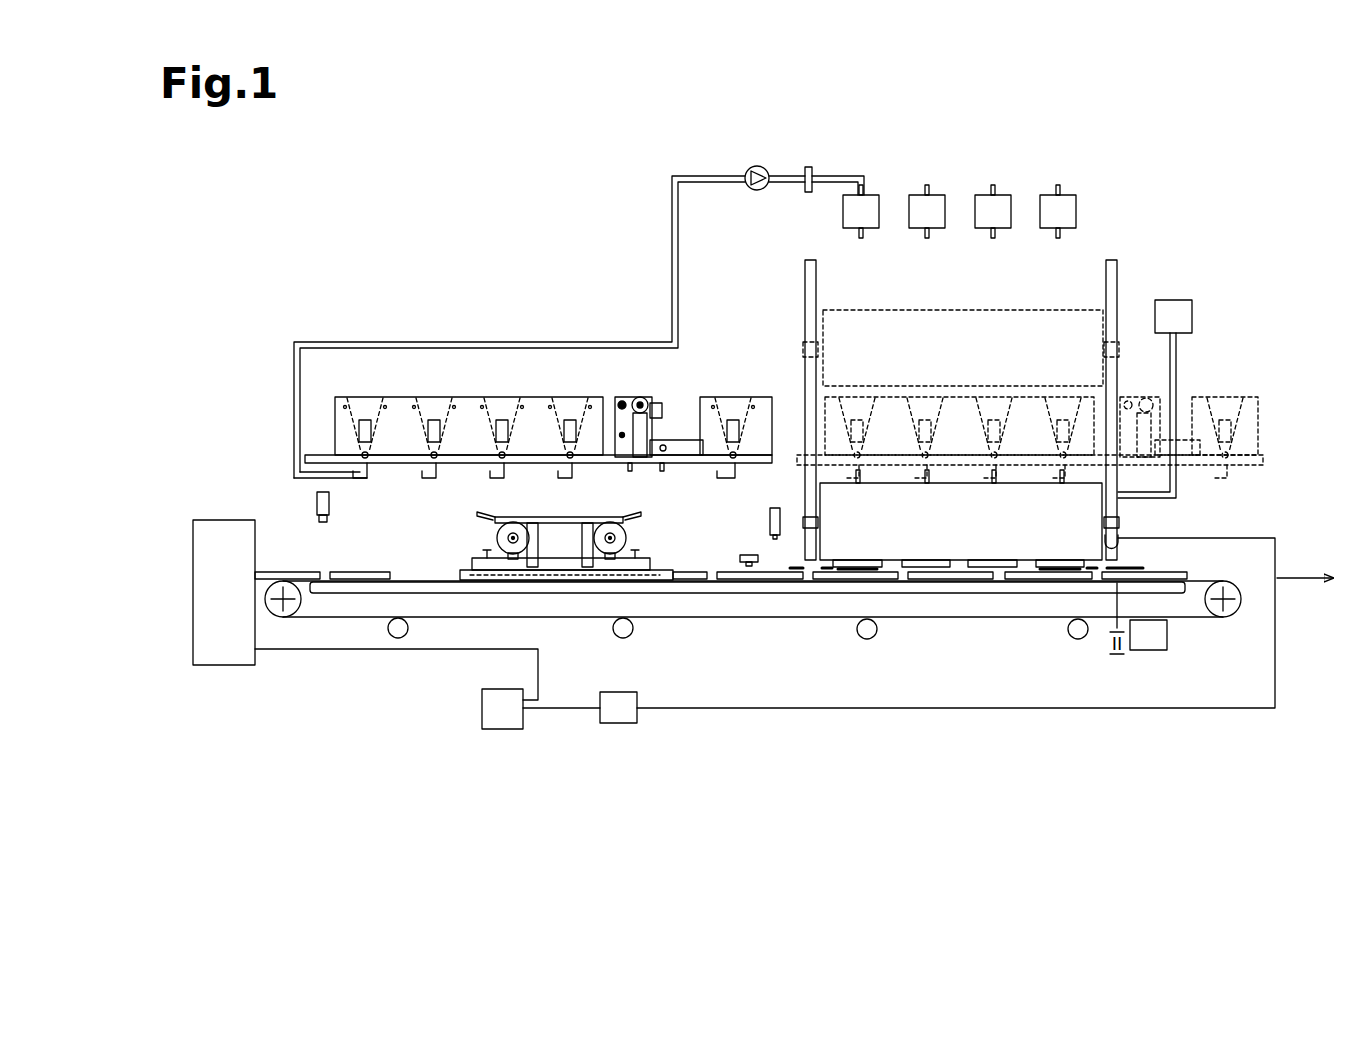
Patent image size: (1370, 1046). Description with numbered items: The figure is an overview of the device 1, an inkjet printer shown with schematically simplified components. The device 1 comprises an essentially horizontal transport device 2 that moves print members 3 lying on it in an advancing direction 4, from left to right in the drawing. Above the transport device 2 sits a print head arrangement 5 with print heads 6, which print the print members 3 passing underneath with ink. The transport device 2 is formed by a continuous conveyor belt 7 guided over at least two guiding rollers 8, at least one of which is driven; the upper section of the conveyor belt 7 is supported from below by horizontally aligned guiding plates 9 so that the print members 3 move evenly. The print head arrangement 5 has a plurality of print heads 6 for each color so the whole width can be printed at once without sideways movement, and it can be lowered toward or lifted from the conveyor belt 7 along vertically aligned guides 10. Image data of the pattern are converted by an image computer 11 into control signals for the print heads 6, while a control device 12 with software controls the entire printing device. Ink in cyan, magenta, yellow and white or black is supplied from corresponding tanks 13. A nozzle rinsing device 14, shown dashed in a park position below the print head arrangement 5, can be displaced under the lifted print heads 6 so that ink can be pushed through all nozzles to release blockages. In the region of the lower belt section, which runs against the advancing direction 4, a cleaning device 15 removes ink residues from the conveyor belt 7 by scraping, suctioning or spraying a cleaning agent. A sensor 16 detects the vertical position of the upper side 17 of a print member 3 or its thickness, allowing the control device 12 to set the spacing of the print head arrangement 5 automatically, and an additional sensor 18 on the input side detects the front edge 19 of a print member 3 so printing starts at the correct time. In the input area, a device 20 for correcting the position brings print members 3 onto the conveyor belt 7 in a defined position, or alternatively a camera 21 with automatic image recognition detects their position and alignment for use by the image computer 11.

The device 1 is at (340, 232).
The transport device 2 is at (333, 628).
The print members 3 is at (378, 568).
The advancing direction 4 is at (1297, 578).
The print head arrangement 5 is at (1070, 503).
The print heads 6 is at (850, 582).
The conveyor belt 7 is at (370, 628).
The guiding rollers 8 is at (270, 630).
The guiding plates 9 is at (430, 600).
The guides 10 is at (798, 278).
The image computer 11 is at (613, 730).
The control device 12 is at (503, 735).
The tanks 13 is at (876, 185).
The nozzle rinsing device 14 is at (435, 385).
The cleaning device 15 is at (1140, 655).
The sensor 16 is at (737, 545).
The upper side 17 is at (708, 572).
The additional sensor 18 is at (770, 545).
The front edge 19 is at (710, 568).
The device for correcting the position 20 is at (488, 522).
The camera 21 is at (312, 502).